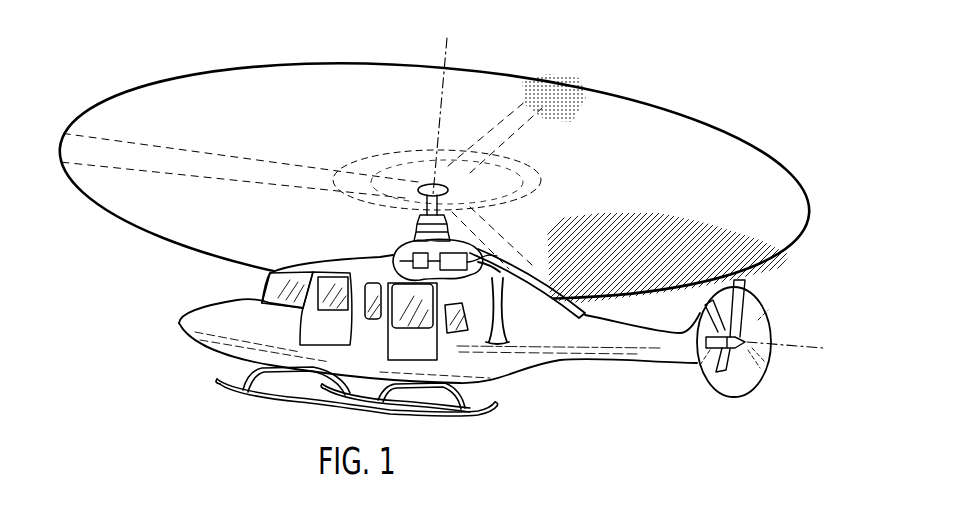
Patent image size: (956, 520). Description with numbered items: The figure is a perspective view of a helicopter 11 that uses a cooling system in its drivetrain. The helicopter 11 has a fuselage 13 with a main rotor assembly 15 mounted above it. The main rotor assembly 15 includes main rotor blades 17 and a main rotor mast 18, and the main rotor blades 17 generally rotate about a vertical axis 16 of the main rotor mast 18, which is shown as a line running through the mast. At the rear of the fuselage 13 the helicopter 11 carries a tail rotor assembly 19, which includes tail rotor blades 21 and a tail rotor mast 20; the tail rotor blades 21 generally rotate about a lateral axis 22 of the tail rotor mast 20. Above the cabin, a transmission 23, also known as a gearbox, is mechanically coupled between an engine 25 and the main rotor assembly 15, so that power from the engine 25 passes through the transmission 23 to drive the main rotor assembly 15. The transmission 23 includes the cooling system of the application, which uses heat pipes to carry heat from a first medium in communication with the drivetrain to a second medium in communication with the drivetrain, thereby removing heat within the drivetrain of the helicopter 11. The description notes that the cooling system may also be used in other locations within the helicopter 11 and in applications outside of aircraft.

The helicopter 11 is at (602, 76).
The fuselage 13 is at (223, 350).
The main rotor assembly 15 is at (486, 225).
The vertical axis 16 is at (438, 127).
The main rotor blades 17 is at (195, 153).
The main rotor mast 18 is at (414, 207).
The tail rotor assembly 19 is at (740, 400).
The tail rotor mast 20 is at (713, 355).
The tail rotor blades 21 is at (753, 313).
The lateral axis 22 is at (787, 350).
The transmission 23 is at (392, 248).
The engine 25 is at (497, 256).